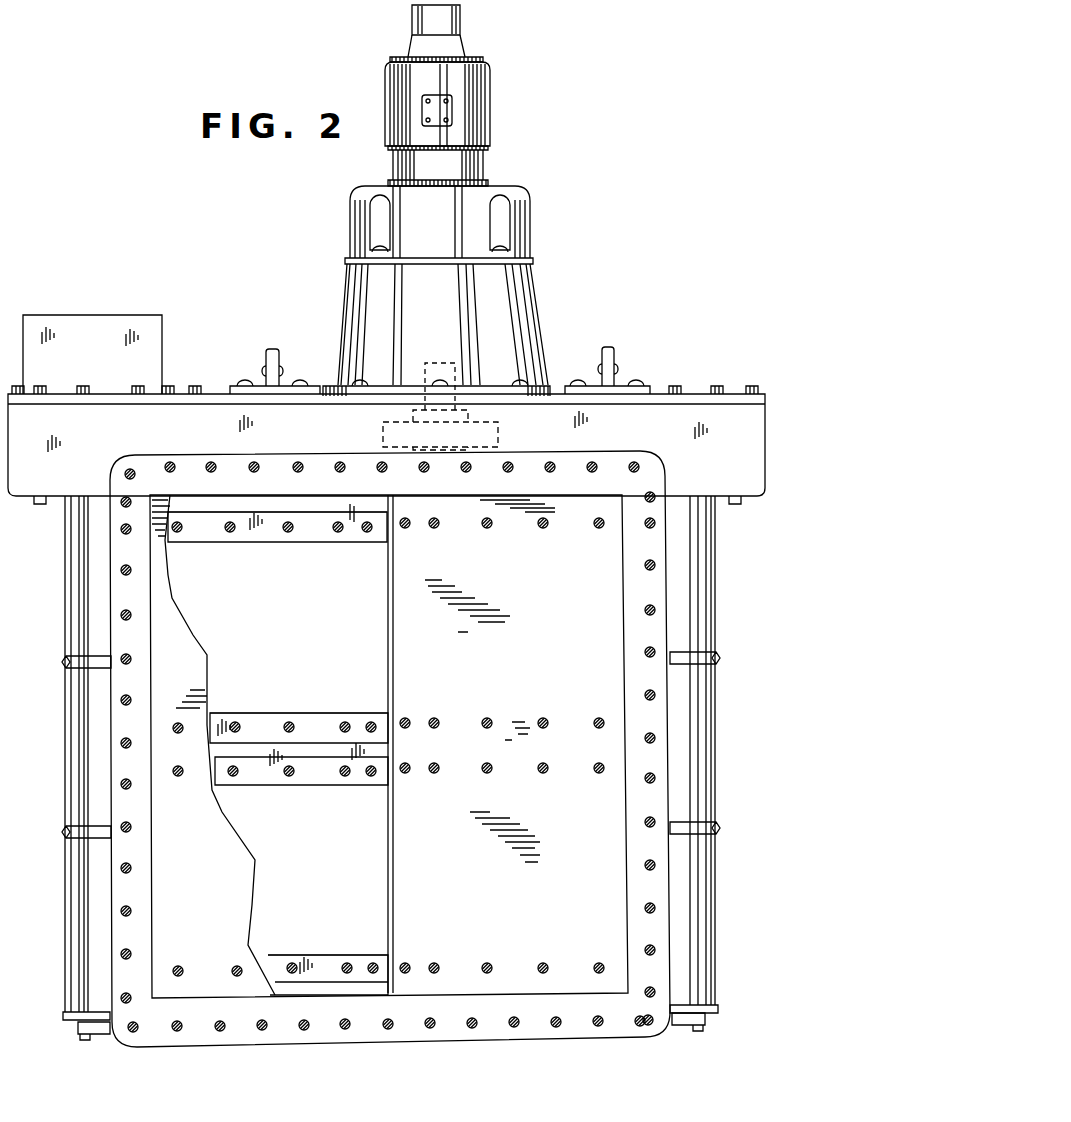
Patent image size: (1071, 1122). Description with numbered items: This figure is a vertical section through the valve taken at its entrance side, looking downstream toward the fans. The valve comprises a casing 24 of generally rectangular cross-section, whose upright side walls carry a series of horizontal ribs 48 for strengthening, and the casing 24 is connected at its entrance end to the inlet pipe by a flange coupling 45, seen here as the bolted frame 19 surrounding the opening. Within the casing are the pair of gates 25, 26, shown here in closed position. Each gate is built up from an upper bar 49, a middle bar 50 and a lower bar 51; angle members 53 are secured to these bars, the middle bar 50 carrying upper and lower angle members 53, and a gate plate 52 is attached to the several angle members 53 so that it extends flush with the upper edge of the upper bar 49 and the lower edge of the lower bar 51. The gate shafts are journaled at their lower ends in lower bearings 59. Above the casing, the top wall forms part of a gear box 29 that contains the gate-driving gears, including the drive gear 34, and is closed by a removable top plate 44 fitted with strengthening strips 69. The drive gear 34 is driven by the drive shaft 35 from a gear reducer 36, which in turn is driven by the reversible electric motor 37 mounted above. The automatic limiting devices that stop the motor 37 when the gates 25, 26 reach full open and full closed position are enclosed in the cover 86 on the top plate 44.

The flange frame 19 is at (258, 1045).
The casing 24 is at (62, 918).
The gate 25 is at (190, 670).
The gate 26 is at (527, 668).
The gear box 29 is at (38, 478).
The drive gear 34 is at (500, 428).
The drive shaft 35 is at (434, 368).
The gear reducer 36 is at (483, 305).
The reversible electric motor 37 is at (468, 105).
The top plate 44 is at (656, 398).
The flange coupling 45 is at (656, 688).
The horizontal ribs 48 is at (97, 660).
The upper bar 49 is at (323, 512).
The middle bar 50 is at (313, 748).
The lower bar 51 is at (318, 988).
The gate plate 52 is at (228, 906).
The angle members 53 is at (248, 540).
The lower bearing 59 is at (109, 1037).
The strengthening strips 69 is at (276, 350).
The cover 86 is at (83, 330).